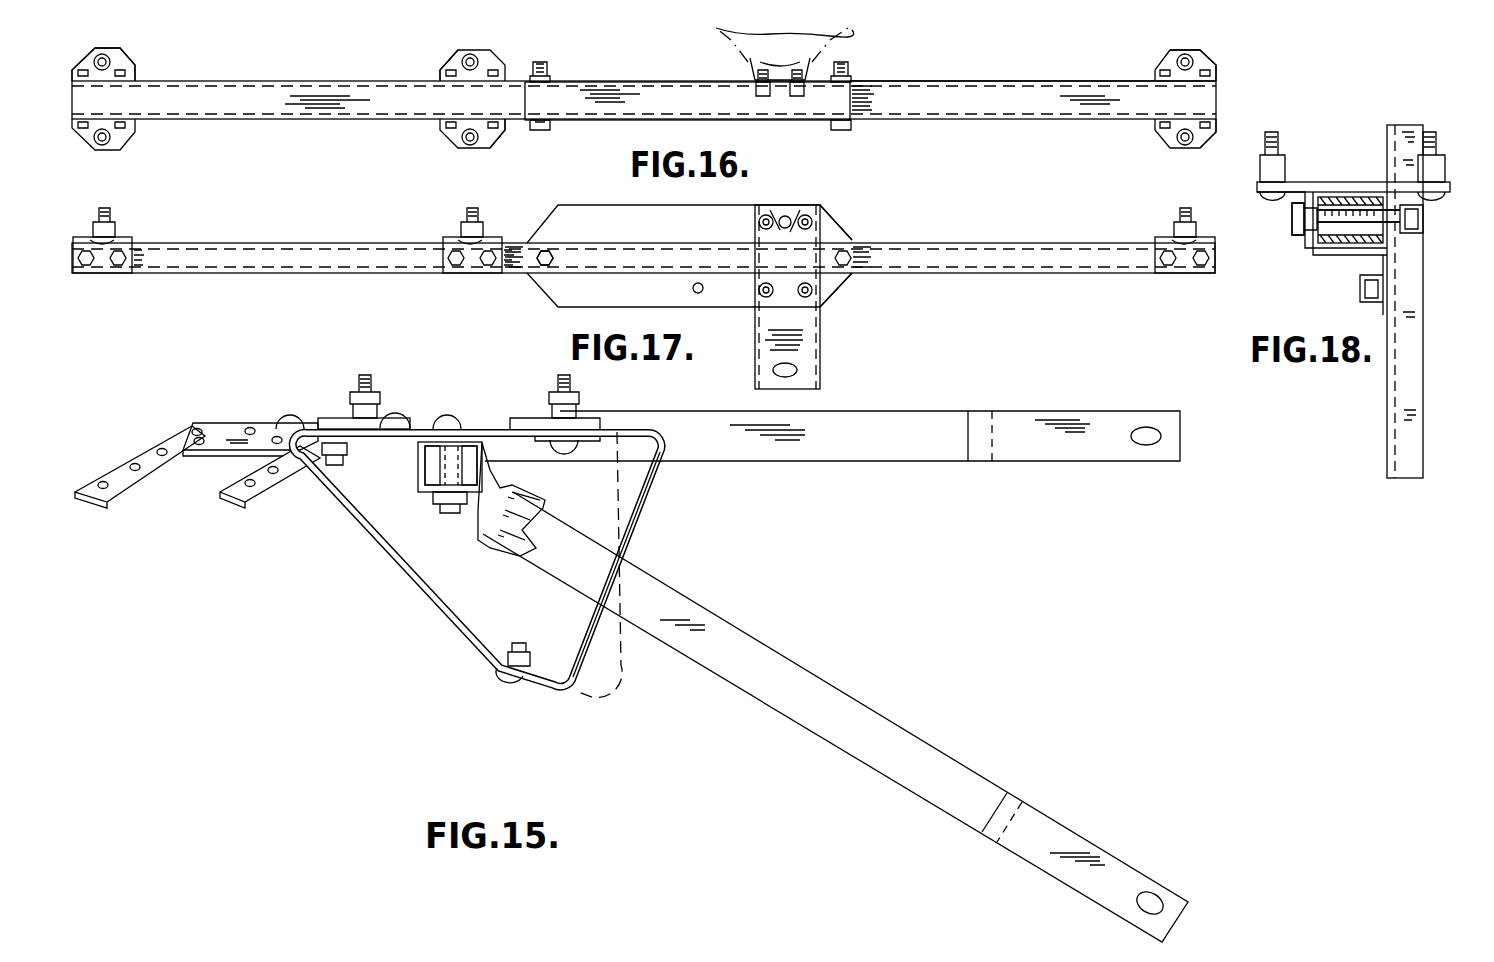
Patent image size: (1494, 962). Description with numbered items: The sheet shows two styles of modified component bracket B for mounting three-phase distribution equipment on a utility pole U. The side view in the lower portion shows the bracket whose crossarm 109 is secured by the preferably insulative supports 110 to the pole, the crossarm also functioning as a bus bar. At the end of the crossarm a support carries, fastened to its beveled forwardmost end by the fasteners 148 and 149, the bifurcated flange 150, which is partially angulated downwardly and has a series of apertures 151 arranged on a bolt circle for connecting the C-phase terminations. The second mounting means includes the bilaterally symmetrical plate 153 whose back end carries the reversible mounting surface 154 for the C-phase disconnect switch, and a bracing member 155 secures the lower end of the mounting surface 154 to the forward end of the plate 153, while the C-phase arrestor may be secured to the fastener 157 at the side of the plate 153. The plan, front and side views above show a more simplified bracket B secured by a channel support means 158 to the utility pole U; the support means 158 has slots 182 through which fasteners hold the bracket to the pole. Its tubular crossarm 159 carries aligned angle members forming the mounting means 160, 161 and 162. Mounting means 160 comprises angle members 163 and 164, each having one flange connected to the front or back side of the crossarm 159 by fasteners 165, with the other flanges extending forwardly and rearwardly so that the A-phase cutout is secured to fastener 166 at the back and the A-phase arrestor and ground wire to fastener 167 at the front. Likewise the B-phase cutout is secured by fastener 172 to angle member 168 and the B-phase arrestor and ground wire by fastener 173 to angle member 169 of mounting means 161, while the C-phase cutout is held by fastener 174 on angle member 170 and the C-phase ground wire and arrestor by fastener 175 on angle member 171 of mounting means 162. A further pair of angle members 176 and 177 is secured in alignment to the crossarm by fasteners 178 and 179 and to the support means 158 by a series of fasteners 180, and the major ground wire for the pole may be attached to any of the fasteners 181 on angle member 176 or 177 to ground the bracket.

In FIG. 15, the crossarm 109 is at (418, 474).
In FIG. 15, the insulative supports 110 is at (808, 463).
In FIG. 15, the fastener 148 is at (294, 412).
In FIG. 15, the fastener 149 is at (392, 412).
In FIG. 15, the bifurcated flange 150 is at (168, 428).
In FIG. 15, the apertures 151 is at (148, 468).
In FIG. 15, the bilaterally symmetrical plate 153 is at (390, 446).
In FIG. 15, the mounting surface 154 is at (642, 512).
In FIG. 15, the bracing member 155 is at (368, 540).
In FIG. 15, the fastener 157 is at (352, 394).
In FIG. 16, the support means 158 is at (750, 70).
In FIG. 17, the support means 158 is at (756, 352).
In FIG. 18, the support means 158 is at (1400, 372).
In FIG. 16, the crossarm 159 is at (1065, 108).
In FIG. 17, the crossarm 159 is at (1045, 268).
In FIG. 18, the crossarm 159 is at (1386, 240).
In FIG. 16, the mounting means 160 is at (152, 128).
In FIG. 16, the mounting means 161 is at (440, 128).
In FIG. 16, the mounting means 162 is at (1140, 130).
In FIG. 16, the angle member 163 is at (128, 76).
In FIG. 17, the angle member 164 is at (103, 275).
In FIG. 16, the fasteners 165 is at (125, 82).
In FIG. 16, the fastener 166 is at (108, 58).
In FIG. 16, the fastener 167 is at (102, 147).
In FIG. 16, the angle member 168 is at (452, 62).
In FIG. 16, the angle member 169 is at (500, 135).
In FIG. 17, the angle member 169 is at (470, 270).
In FIG. 16, the angle member 170 is at (1205, 55).
In FIG. 18, the angle member 170 is at (1425, 205).
In FIG. 16, the angle member 171 is at (1213, 132).
In FIG. 17, the angle member 171 is at (1190, 272).
In FIG. 18, the angle member 171 is at (1292, 194).
In FIG. 16, the fastener 172 is at (482, 55).
In FIG. 16, the fastener 173 is at (468, 140).
In FIG. 16, the fastener 174 is at (1172, 54).
In FIG. 16, the fastener 175 is at (1175, 142).
In FIG. 17, the angle member 176 is at (826, 214).
In FIG. 18, the angle member 176 is at (1335, 192).
In FIG. 17, the angle member 177 is at (838, 286).
In FIG. 18, the angle member 177 is at (1360, 286).
In FIG. 17, the fastener 178 is at (532, 268).
In FIG. 17, the fastener 179 is at (855, 245).
In FIG. 17, the fasteners 180 is at (766, 215).
In FIG. 17, the fasteners 181 is at (704, 290).
In FIG. 17, the slots 182 is at (805, 215).
In FIG. 16, the utility pole U is at (850, 38).
In FIG. 16, the bracket B is at (878, 78).